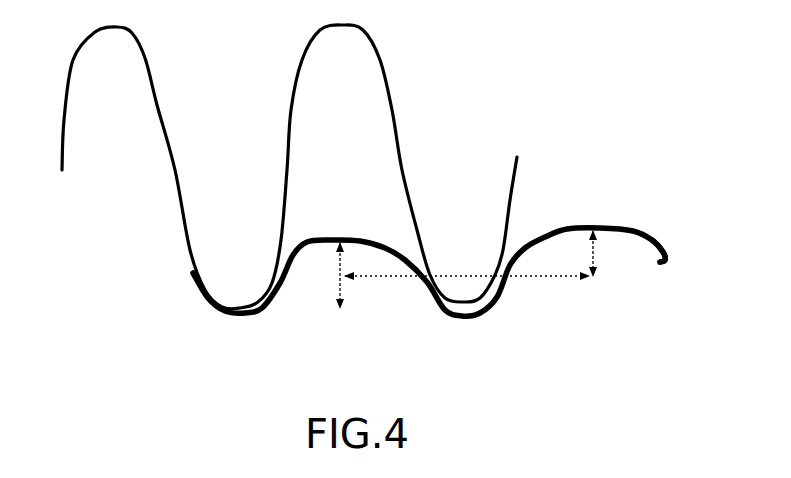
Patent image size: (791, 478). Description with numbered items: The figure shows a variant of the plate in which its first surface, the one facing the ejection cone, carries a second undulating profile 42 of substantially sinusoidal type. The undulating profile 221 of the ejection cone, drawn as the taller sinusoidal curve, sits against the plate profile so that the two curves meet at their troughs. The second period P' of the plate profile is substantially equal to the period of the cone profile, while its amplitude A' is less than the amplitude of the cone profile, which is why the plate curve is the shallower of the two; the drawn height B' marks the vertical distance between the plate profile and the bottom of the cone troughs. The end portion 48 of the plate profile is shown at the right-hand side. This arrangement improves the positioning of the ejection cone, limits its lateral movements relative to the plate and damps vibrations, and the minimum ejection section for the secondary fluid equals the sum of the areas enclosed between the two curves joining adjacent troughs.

The surface profile of ring (original profile) 221 is at (396, 112).
The second undulating profile 42 is at (598, 228).
The end portion of profile 42 48 is at (640, 262).
The depth dimension B' is at (306, 305).
The second period P' is at (467, 324).
The amplitude A' is at (618, 307).